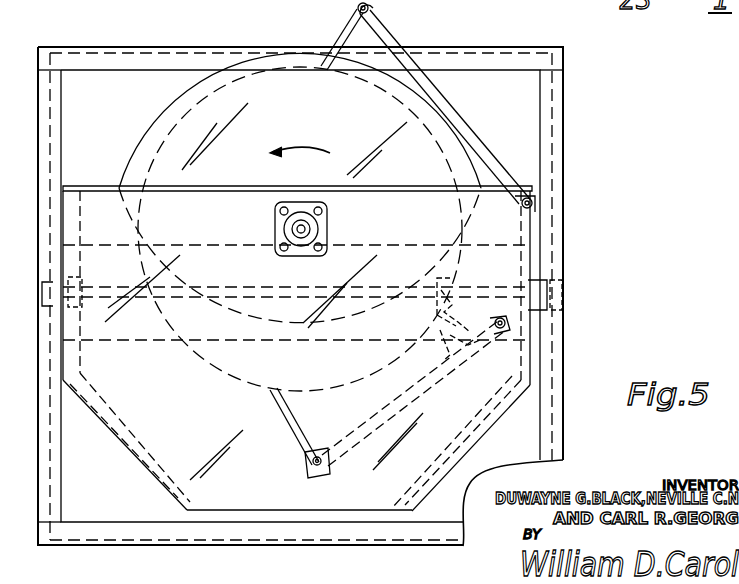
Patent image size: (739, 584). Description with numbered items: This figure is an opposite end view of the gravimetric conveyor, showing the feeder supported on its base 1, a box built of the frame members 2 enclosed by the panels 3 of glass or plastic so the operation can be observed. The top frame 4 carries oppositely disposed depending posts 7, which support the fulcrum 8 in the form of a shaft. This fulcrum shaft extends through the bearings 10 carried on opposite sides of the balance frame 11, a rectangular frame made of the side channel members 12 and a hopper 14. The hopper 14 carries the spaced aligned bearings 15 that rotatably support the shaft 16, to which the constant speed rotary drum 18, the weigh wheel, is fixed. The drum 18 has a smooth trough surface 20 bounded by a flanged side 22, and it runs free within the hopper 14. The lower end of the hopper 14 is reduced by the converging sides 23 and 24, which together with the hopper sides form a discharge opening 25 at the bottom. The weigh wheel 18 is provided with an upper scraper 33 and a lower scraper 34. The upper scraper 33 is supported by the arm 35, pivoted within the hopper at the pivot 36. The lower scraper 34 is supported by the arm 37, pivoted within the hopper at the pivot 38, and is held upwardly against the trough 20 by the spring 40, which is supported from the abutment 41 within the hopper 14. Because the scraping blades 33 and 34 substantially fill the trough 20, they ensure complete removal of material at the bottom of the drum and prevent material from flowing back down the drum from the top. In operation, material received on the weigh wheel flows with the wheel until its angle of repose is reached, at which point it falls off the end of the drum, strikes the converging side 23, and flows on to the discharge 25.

The base 1 is at (124, 533).
The frame members 2 is at (55, 87).
The panels 3 is at (120, 126).
The top frame 4 is at (136, 56).
The depending posts 7 is at (52, 155).
The fulcrum 8 is at (198, 298).
The bearings 10 is at (62, 315).
The balance frame 11 is at (542, 340).
The side channel members 12 is at (63, 246).
The hopper 14 is at (160, 428).
The bearings 15 is at (324, 224).
The shaft 16 is at (290, 229).
The rotary drum 18 is at (312, 36).
The trough surface 20 is at (452, 118).
The flanged side 22 is at (284, 42).
The converging side 23 is at (160, 480).
The converging side 24 is at (470, 458).
The discharge opening 25 is at (265, 512).
The upper scraper 33 is at (391, 8).
The lower scraper 34 is at (290, 432).
The arm 35 is at (390, 32).
The pivot 36 is at (536, 201).
The arm 37 is at (436, 388).
The pivot 38 is at (508, 323).
The spring 40 is at (440, 323).
The abutment 41 is at (446, 276).